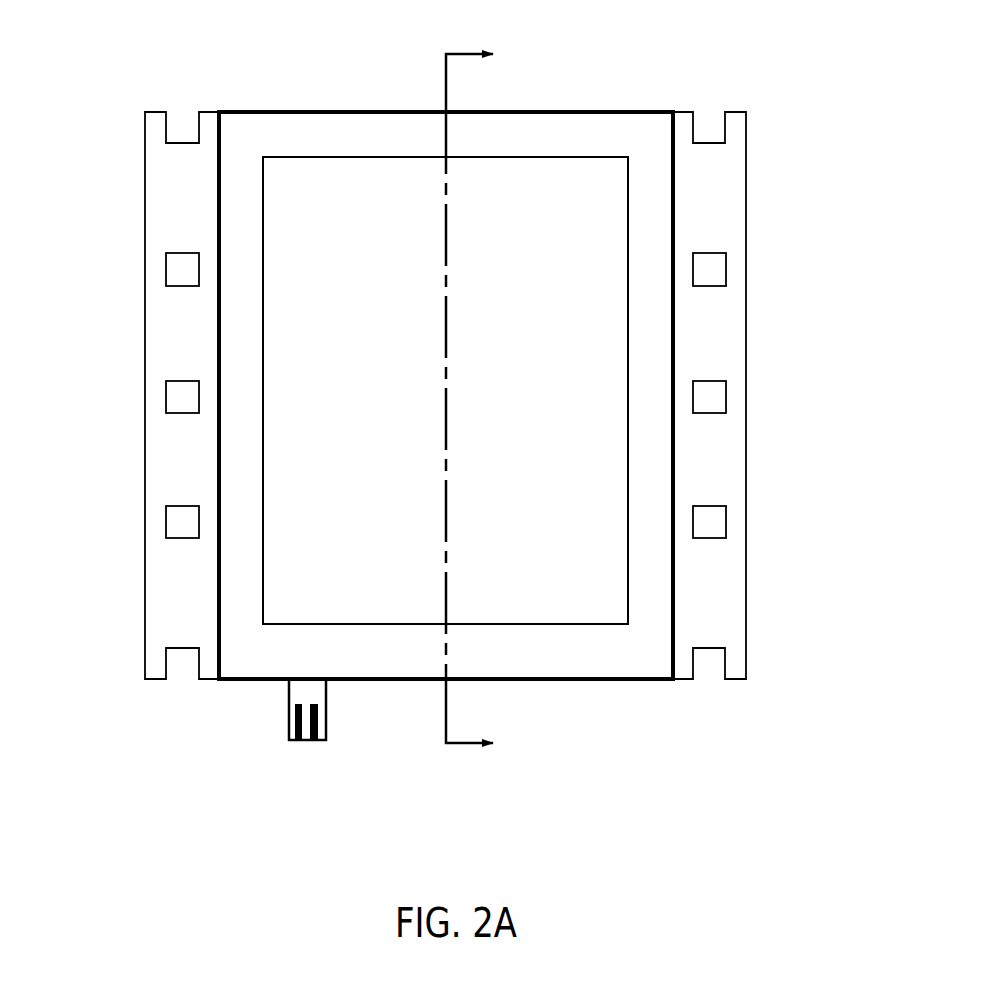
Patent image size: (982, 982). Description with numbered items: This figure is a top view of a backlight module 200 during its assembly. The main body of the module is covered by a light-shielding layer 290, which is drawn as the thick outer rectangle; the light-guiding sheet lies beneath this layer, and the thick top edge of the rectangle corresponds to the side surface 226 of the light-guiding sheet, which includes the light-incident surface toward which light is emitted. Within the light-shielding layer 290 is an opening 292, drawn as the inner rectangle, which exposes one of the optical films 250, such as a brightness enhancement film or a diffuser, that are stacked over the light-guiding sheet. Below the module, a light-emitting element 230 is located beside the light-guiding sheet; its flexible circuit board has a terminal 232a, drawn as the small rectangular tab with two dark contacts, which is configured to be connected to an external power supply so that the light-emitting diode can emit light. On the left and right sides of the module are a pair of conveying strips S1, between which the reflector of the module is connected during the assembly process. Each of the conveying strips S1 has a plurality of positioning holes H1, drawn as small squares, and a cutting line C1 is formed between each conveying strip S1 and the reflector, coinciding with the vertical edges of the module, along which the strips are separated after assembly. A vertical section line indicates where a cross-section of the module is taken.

The backlight module 200 is at (708, 795).
The side surface 226 is at (569, 108).
The light-emitting element 230 is at (277, 783).
The terminal 232a is at (292, 697).
The optical films 250 is at (612, 444).
The light-shielding layer 290 is at (648, 145).
The opening 292 is at (338, 198).
The conveying strips S1 is at (182, 190).
The positioning holes H1 is at (176, 270).
The cutting line C1 is at (216, 583).